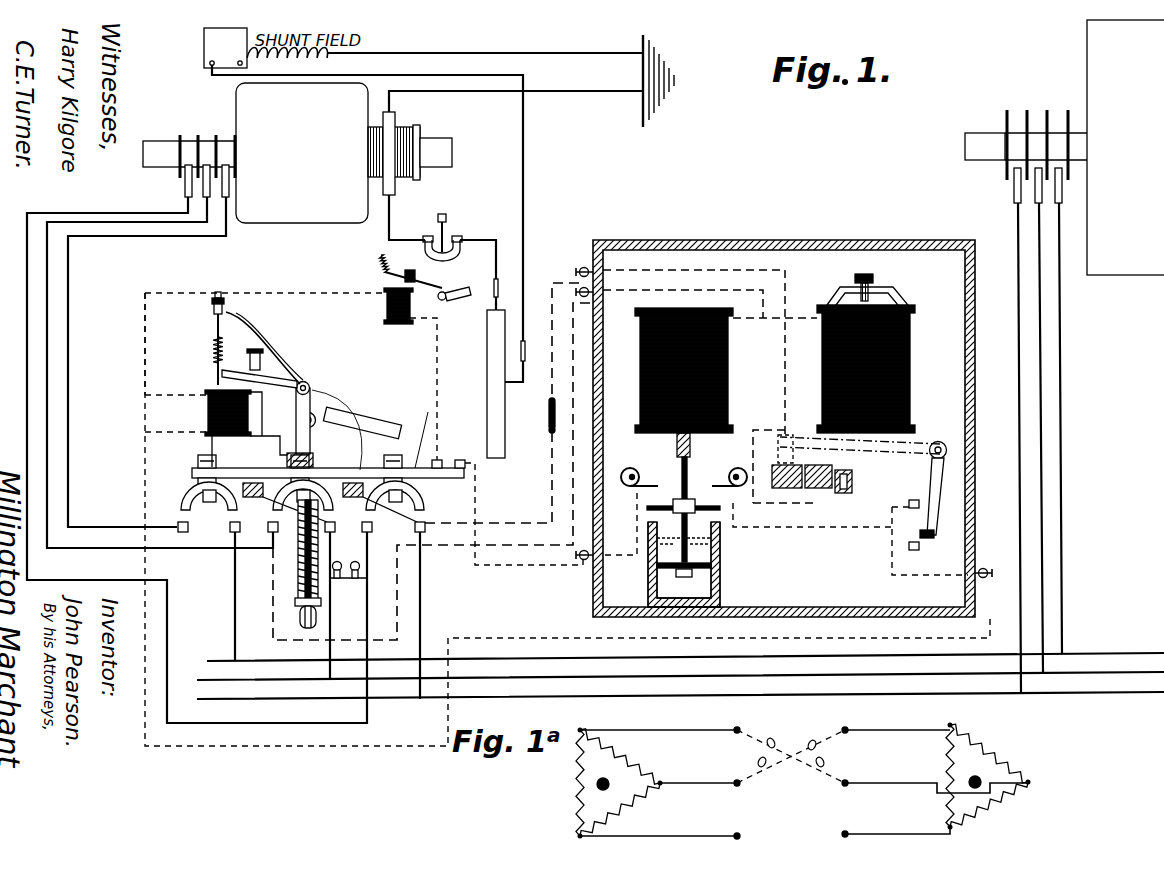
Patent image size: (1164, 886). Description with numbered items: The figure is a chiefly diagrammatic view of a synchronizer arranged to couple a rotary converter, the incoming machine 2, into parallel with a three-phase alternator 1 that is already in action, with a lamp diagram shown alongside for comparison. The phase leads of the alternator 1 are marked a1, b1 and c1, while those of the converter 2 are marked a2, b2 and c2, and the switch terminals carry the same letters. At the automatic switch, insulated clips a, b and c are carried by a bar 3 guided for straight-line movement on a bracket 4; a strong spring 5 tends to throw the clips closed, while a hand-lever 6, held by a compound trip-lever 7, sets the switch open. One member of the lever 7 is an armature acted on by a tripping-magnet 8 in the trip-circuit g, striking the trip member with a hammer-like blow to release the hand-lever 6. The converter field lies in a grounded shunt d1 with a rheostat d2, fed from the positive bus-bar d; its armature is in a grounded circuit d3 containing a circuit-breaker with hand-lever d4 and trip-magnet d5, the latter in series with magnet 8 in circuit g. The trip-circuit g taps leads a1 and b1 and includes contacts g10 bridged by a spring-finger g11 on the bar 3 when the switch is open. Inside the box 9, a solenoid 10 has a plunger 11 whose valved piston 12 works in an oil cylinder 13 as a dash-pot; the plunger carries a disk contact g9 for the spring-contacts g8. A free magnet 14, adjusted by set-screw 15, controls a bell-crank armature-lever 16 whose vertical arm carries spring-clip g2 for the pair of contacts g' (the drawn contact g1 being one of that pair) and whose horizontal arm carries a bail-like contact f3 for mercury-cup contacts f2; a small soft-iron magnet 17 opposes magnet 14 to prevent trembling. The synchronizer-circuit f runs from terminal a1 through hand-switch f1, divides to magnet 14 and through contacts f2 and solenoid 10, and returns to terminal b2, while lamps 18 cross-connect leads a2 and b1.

In FIG. 1, the alternator already in action 1 is at (1086, 72).
In FIG. 1A, the alternator already in action 1 is at (988, 776).
In FIG. 1, the incoming machine 2 is at (228, 105).
In FIG. 1A, the incoming machine 2 is at (619, 783).
In FIG. 1, the switch bar 3 is at (352, 470).
In FIG. 1, the bracket 4 is at (318, 404).
In FIG. 1, the spring 5 is at (299, 566).
In FIG. 1, the hand-lever 6 is at (329, 417).
In FIG. 1, the compound trip-lever 7 is at (276, 377).
In FIG. 1, the tripping-magnet 8 is at (208, 416).
In FIG. 1, the box-like support 9 is at (790, 241).
In FIG. 1, the solenoid 10 is at (733, 390).
In FIG. 1, the plunger 11 is at (691, 459).
In FIG. 1, the valved piston 12 is at (714, 569).
In FIG. 1, the cylinder 13 is at (648, 593).
In FIG. 1, the free magnet 14 is at (916, 396).
In FIG. 1, the set-screw 15 is at (876, 281).
In FIG. 1, the armature-lever 16 is at (940, 441).
In FIG. 1, the induction-magnet 17 is at (853, 483).
In FIG. 1, the lamps 18 is at (355, 580).
In FIG. 1, the insulated clip a is at (313, 515).
In FIG. 1, the phase lead a1 is at (1018, 262).
In FIG. 1A, the phase lead a1 is at (890, 730).
In FIG. 1, the phase lead a2 is at (188, 206).
In FIG. 1A, the phase lead a2 is at (651, 730).
In FIG. 1, the insulated clip b is at (330, 502).
In FIG. 1, the phase lead b1 is at (1039, 290).
In FIG. 1A, the phase lead b1 is at (890, 783).
In FIG. 1, the phase lead b2 is at (207, 218).
In FIG. 1A, the phase lead b2 is at (680, 783).
In FIG. 1, the insulated clip c is at (186, 500).
In FIG. 1, the phase lead c1 is at (1059, 325).
In FIG. 1A, the phase lead c1 is at (870, 834).
In FIG. 1, the phase lead c2 is at (226, 238).
In FIG. 1A, the phase lead c2 is at (670, 836).
In FIG. 1, the positive direct-current bus-bar d is at (482, 344).
In FIG. 1, the grounded shunt field-circuit d1 is at (470, 54).
In FIG. 1, the rheostat d2 is at (204, 50).
In FIG. 1, the direct-current armature-circuit d3 is at (554, 88).
In FIG. 1, the circuit-breaker hand-lever d4 is at (450, 288).
In FIG. 1, the circuit-breaker trip-magnet d5 is at (385, 306).
In FIG. 1, the synchronizer-circuit conductor f is at (263, 626).
In FIG. 1, the hand-switch f1 is at (548, 422).
In FIG. 1, the mercury-cup contacts f2 is at (795, 505).
In FIG. 1, the bail-like contact f3 is at (778, 468).
In FIG. 1, the trip-circuit conductor g is at (567, 519).
In FIG. 1, the contacts g' is at (125, 344).
In FIG. 1, the contact g1 is at (912, 510).
In FIG. 1, the insulated spring-clip g2 is at (926, 540).
In FIG. 1, the spring-contacts g8 is at (641, 472).
In FIG. 1, the disk contact g9 is at (668, 507).
In FIG. 1, the contacts g10 is at (440, 460).
In FIG. 1, the spring-finger contact g11 is at (427, 428).